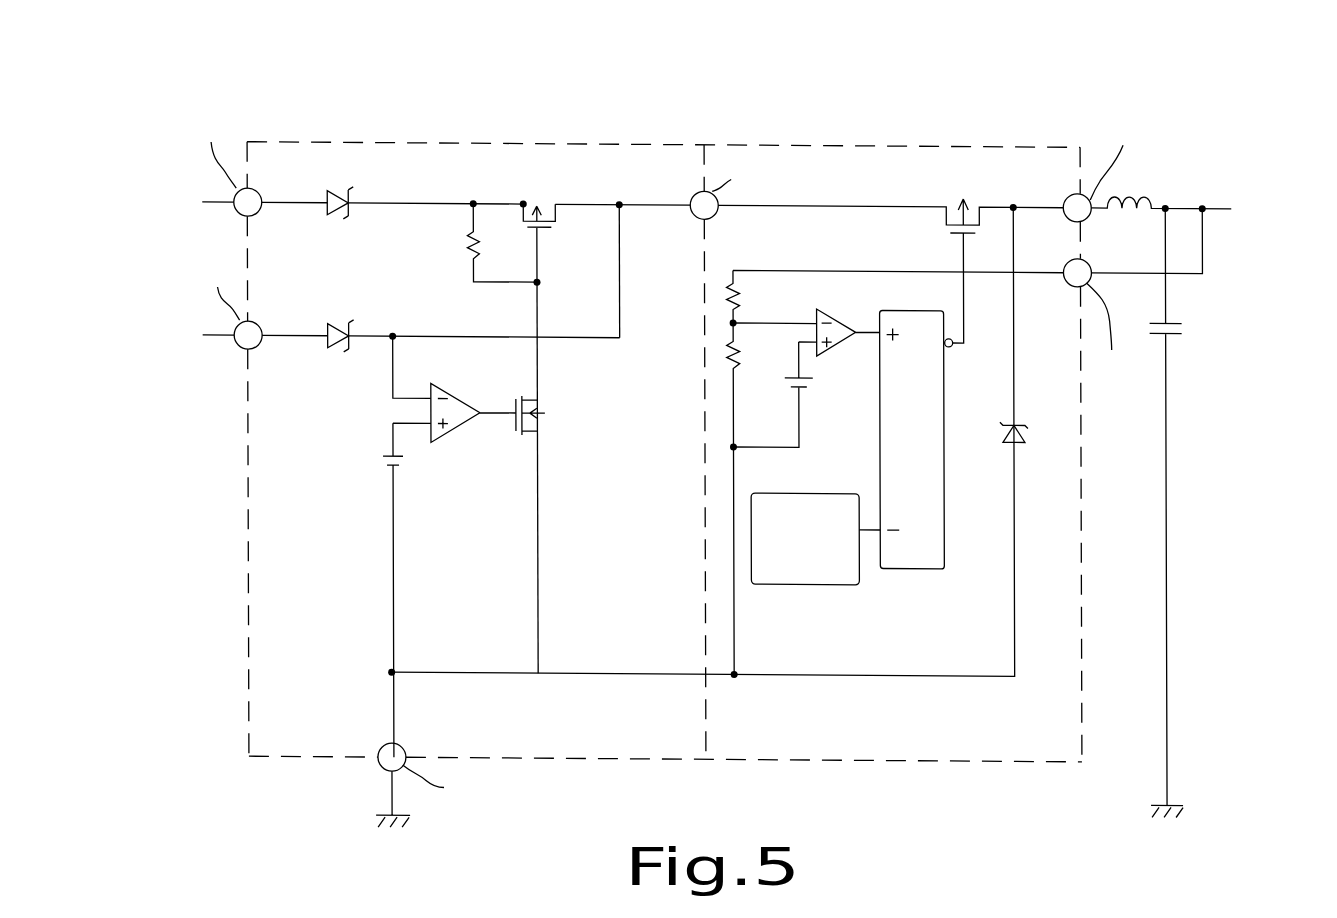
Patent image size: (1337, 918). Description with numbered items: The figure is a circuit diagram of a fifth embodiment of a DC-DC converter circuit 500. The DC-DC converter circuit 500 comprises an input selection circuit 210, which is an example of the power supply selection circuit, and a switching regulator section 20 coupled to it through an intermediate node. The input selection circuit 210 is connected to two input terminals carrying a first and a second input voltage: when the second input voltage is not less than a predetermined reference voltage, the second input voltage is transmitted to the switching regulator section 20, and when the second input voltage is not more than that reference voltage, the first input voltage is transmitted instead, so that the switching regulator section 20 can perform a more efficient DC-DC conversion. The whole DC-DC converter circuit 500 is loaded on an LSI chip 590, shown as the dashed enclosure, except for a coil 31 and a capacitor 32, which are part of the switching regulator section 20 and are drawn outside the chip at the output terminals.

The DC-DC converter circuit 500 is at (1012, 101).
The LSI chip 590 is at (848, 143).
The switching regulator section 20 is at (1096, 137).
The input selection circuit 210 is at (566, 172).
The coil 31 is at (1135, 184).
The capacitor 32 is at (1190, 322).